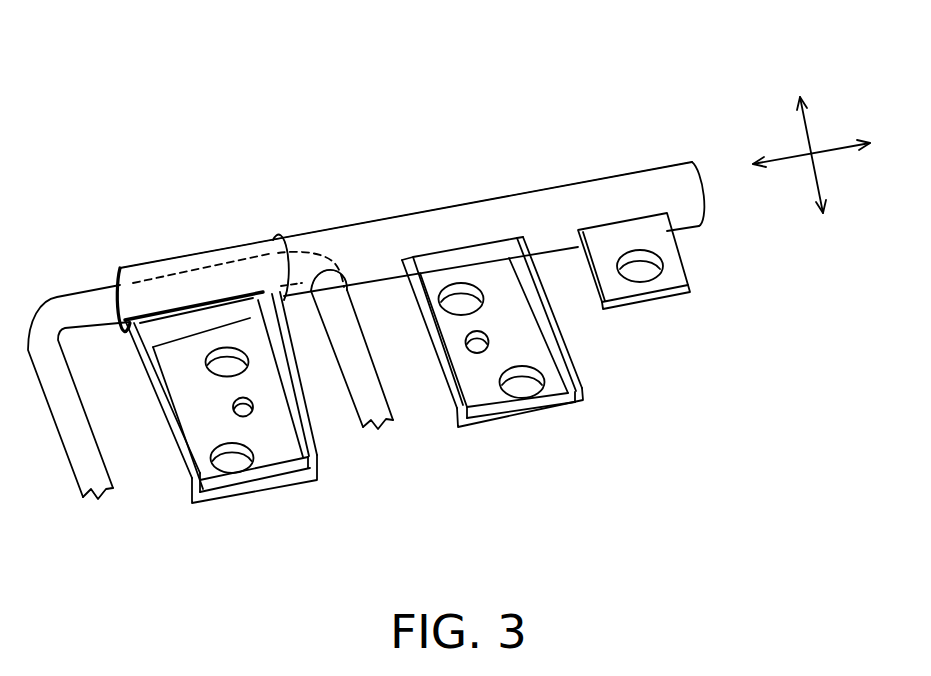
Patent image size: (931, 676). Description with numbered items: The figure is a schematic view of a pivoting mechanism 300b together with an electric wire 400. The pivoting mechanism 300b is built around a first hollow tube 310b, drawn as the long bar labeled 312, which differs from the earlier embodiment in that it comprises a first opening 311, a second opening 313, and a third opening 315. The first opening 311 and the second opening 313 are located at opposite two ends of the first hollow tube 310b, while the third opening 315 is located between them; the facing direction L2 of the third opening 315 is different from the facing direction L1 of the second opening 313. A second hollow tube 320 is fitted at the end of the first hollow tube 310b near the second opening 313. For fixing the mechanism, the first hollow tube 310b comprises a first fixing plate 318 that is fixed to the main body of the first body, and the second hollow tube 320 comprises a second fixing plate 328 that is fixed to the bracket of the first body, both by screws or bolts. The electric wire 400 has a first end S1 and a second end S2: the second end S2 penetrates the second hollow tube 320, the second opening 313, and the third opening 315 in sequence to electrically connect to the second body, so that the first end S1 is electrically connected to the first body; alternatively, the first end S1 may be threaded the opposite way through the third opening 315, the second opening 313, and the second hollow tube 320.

The pivoting mechanism 300b is at (568, 147).
The bar 312 is at (412, 212).
The first hollow tube 310b is at (412, 228).
The first opening 311 is at (702, 195).
The second opening 313 is at (275, 246).
The third opening 315 is at (319, 286).
The first fixing plate 318 is at (555, 393).
The second hollow tube 320 is at (220, 257).
The second fixing plate 328 is at (275, 463).
The electric wire 400 is at (43, 342).
The first end S1 is at (100, 497).
The second end S2 is at (387, 429).
The facing direction L1 is at (826, 147).
The facing direction L2 is at (817, 172).